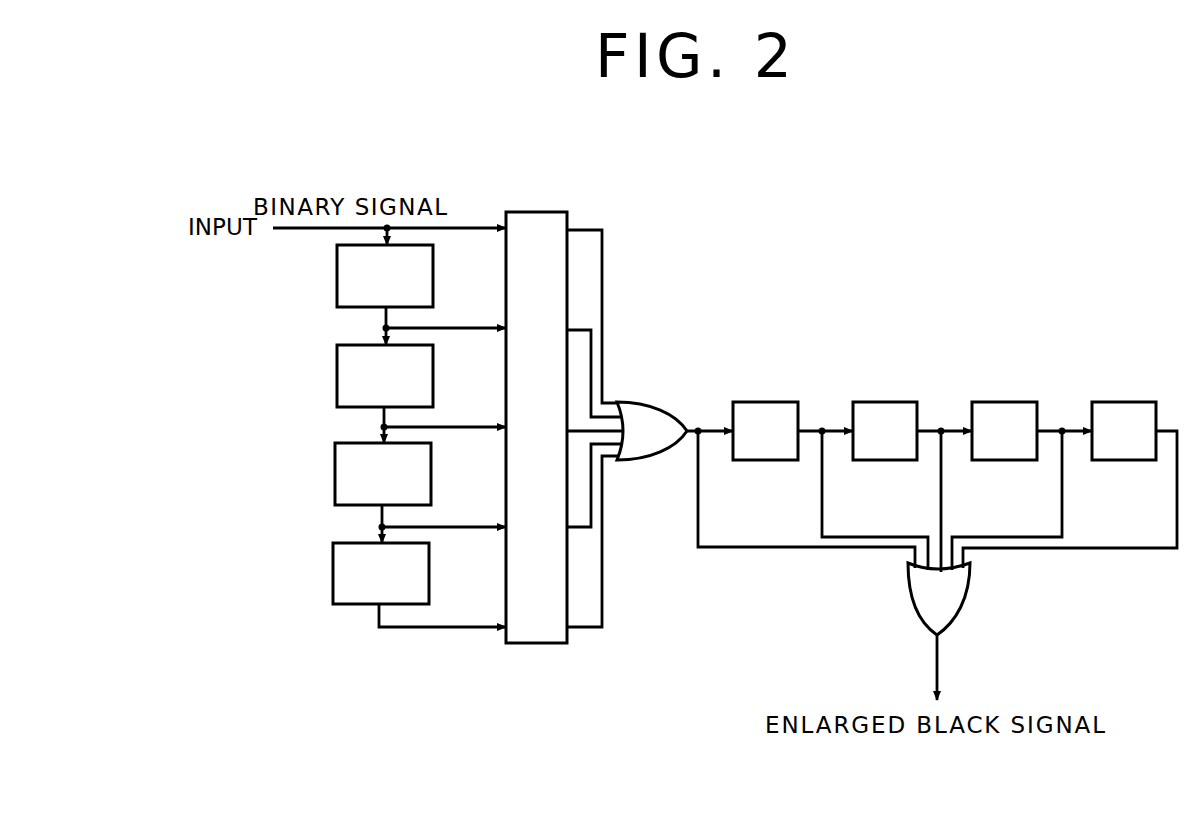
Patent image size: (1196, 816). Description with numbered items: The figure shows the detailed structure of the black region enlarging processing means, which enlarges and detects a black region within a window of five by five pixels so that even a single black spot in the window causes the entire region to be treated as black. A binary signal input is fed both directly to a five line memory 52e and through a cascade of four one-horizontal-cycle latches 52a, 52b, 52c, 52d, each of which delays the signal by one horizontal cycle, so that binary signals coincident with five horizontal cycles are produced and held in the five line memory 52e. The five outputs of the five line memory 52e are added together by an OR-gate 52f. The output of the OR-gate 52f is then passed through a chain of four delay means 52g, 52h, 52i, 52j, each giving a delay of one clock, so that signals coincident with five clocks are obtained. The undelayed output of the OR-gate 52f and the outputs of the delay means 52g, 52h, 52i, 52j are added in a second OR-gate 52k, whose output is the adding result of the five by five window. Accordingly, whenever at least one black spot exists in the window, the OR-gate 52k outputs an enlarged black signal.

The 1H latch 52a is at (337, 277).
The 1H latch 52b is at (337, 377).
The 1H latch 52c is at (335, 475).
The 1H latch 52d is at (333, 573).
The 5 line memory 52e is at (571, 212).
The OR-gate 52f is at (650, 410).
The delay means 52g is at (771, 410).
The delay means 52h is at (893, 410).
The delay means 52i is at (1012, 410).
The delay means 52j is at (1128, 410).
The OR-gate 52k is at (970, 590).